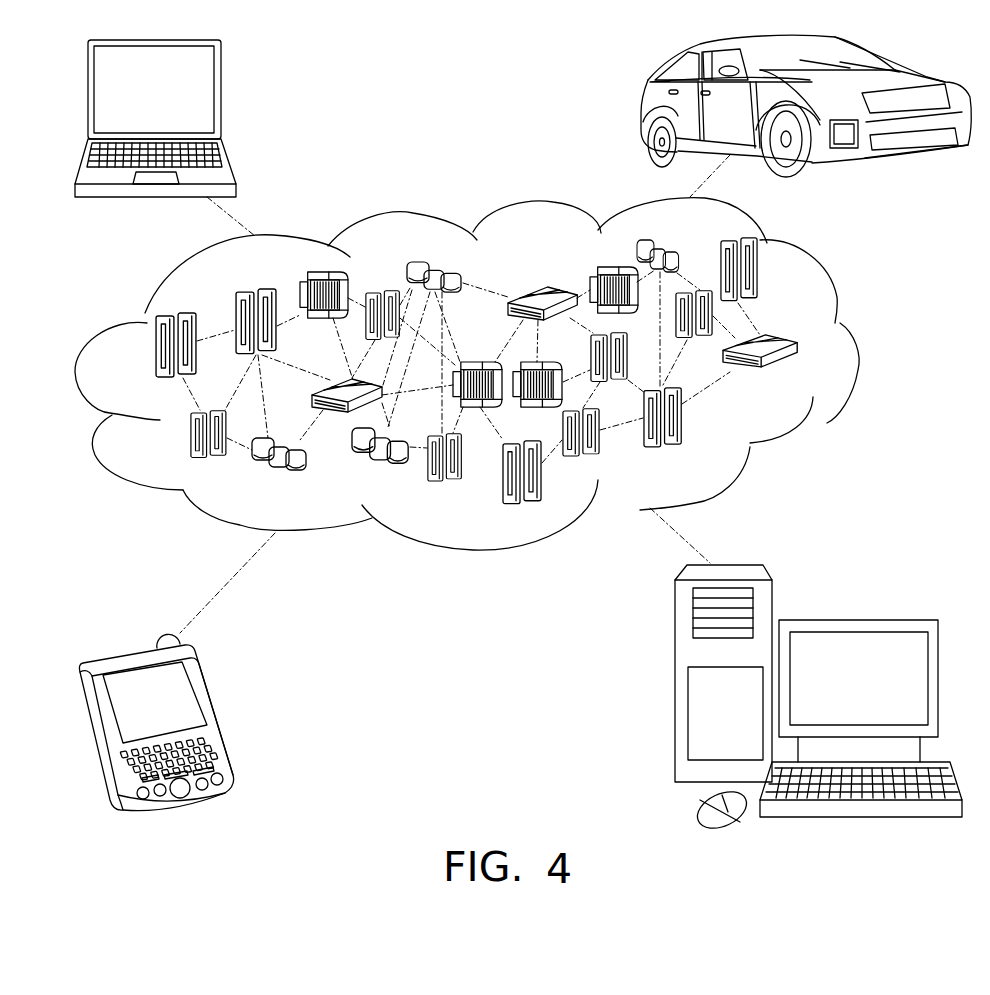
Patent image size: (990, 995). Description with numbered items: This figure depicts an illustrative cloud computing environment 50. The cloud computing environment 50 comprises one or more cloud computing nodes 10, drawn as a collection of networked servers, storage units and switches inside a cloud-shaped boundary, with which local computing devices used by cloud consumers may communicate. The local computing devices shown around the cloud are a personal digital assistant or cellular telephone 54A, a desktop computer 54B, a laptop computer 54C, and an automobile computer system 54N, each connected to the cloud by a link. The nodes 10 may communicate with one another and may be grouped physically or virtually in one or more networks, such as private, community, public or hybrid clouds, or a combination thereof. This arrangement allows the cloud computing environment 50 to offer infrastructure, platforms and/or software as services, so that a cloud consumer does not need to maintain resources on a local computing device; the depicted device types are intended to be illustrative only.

The cloud computing node 10 is at (809, 376).
The cloud computing environment 50 is at (492, 374).
The personal digital assistant (PDA) or cellular telephone 54A is at (183, 672).
The desktop computer 54B is at (806, 671).
The laptop computer 54C is at (183, 138).
The automobile computer system 54N is at (769, 116).